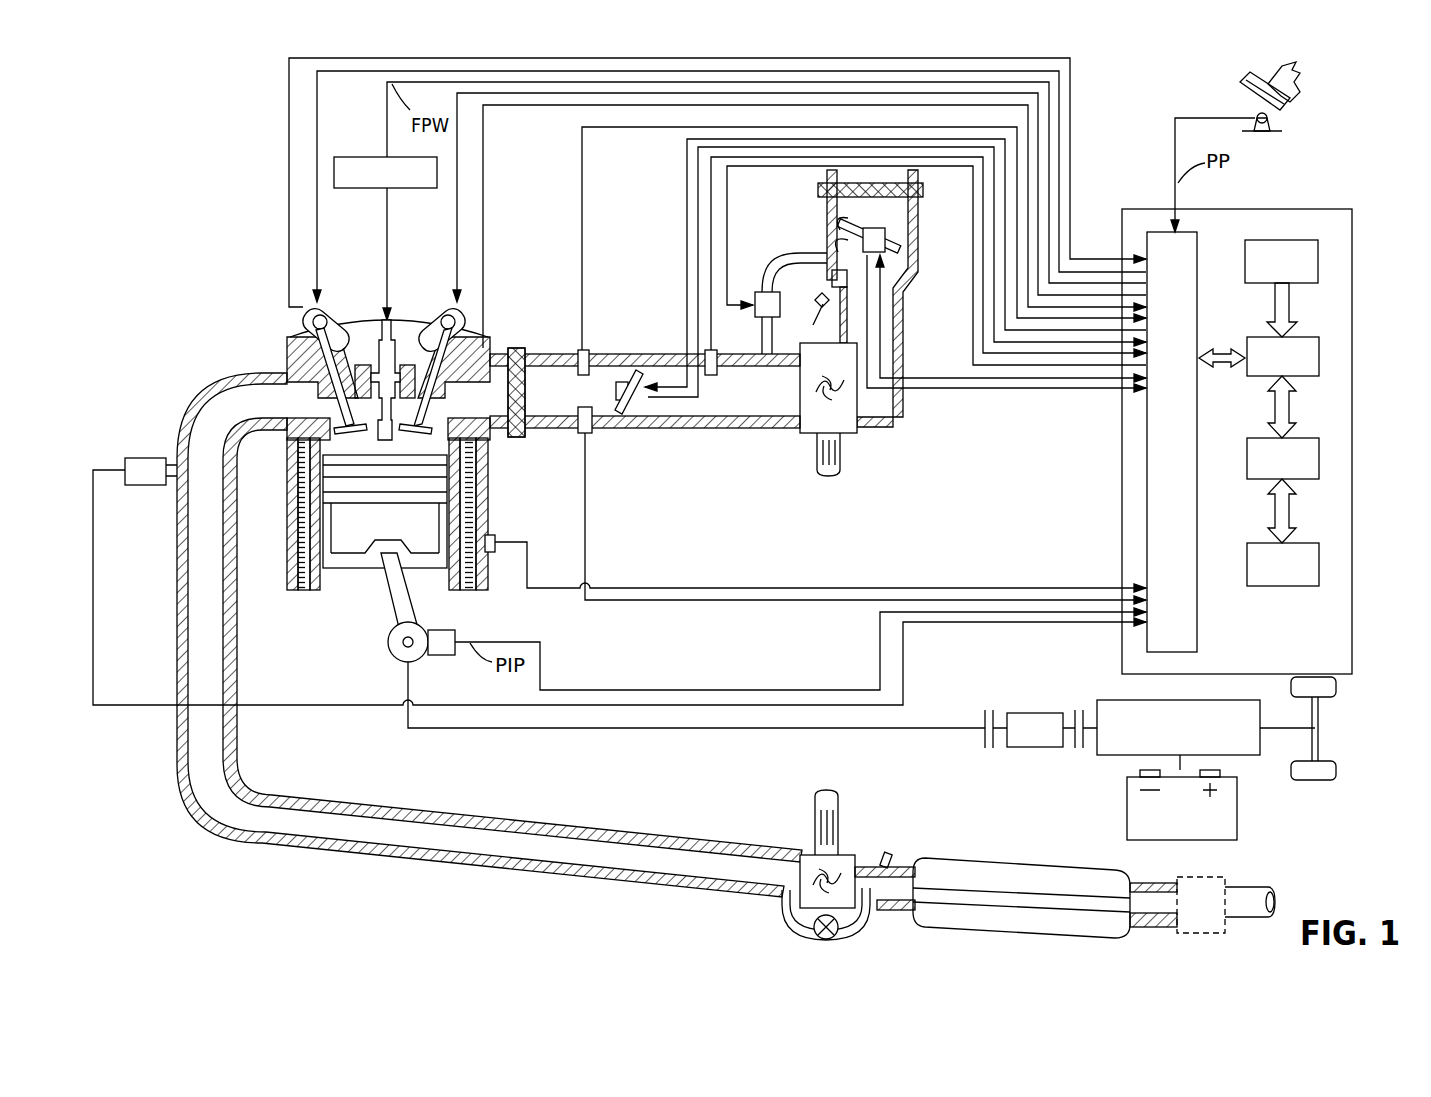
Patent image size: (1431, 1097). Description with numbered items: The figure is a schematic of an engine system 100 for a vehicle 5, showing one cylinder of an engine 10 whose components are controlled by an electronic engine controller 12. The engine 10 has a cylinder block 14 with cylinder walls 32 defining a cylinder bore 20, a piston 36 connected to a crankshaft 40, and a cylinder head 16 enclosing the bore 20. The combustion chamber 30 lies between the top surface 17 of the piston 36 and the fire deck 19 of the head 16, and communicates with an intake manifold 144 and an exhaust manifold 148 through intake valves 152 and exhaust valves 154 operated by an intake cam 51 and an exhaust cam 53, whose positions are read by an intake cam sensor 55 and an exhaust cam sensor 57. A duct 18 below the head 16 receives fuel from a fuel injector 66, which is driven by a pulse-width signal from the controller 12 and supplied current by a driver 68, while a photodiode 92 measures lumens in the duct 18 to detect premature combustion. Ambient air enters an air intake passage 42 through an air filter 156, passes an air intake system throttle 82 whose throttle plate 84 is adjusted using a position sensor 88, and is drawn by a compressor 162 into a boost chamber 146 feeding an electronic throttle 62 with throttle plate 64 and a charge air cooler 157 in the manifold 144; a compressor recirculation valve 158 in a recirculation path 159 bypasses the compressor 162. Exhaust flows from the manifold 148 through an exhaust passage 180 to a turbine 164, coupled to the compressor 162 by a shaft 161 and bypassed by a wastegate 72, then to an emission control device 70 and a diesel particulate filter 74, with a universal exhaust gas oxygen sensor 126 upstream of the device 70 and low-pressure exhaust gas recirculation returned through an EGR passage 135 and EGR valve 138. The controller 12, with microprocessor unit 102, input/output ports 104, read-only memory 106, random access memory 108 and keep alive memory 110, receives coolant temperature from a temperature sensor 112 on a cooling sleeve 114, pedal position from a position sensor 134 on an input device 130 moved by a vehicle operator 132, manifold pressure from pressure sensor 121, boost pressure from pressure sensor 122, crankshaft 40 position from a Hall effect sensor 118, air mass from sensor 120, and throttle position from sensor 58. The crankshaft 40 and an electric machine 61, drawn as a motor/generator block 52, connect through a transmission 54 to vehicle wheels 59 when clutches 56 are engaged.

The vehicle 5 is at (1183, 771).
The engine 10 is at (210, 262).
The electronic engine controller 12 is at (1276, 425).
The cylinder block 14 is at (275, 490).
The cylinder head 16 is at (502, 338).
The top surface of piston 17 is at (290, 572).
The duct 18 is at (415, 380).
The fire deck 19 is at (480, 345).
The cylinder bore 20 is at (273, 612).
The combustion chamber 30 is at (300, 535).
The cylinder walls 32 is at (332, 587).
The piston 36 is at (372, 560).
The crankshaft 40 is at (393, 660).
The air intake passage 42 is at (895, 298).
The intake cam 51 is at (448, 310).
The motor/generator 52 is at (1040, 747).
The exhaust cam 53 is at (325, 310).
The transmission 54 is at (1245, 755).
The intake cam sensor 55 is at (465, 335).
The clutches 56 is at (985, 715).
The exhaust cam sensor 57 is at (300, 322).
The throttle position sensor 58 is at (648, 400).
The vehicle wheels 59 is at (1320, 781).
The electric machine 61 is at (1180, 841).
The electronic throttle 62 is at (624, 370).
The throttle plate 64 is at (650, 375).
The fuel injector 66 is at (392, 330).
The driver 68 is at (380, 156).
The emission control device 70 is at (915, 935).
The wastegate 72 is at (812, 932).
The diesel particulate filter 74 is at (1202, 905).
The air intake system throttle 82 is at (843, 232).
The throttle plate 84 is at (850, 225).
The position sensor 88 is at (828, 238).
The photodiode 92 is at (358, 380).
The engine system 100 is at (135, 110).
The microprocessor unit 102 is at (1320, 350).
The input/output ports 104 is at (1200, 238).
The read-only memory 106 is at (1320, 258).
The random access memory 108 is at (1320, 452).
The keep alive memory 110 is at (1320, 558).
The temperature sensor 112 is at (495, 532).
The cooling sleeve 114 is at (485, 590).
The Hall effect sensor 118 is at (448, 656).
The air mass sensor 120 is at (592, 433).
The pressure sensor 121 is at (586, 348).
The pressure sensor 122 is at (717, 350).
The UEGO sensor 126 is at (125, 460).
The input device 130 is at (1246, 100).
The vehicle operator 132 is at (1298, 80).
The position sensor 134 is at (1270, 118).
The EGR passage 135 is at (884, 860).
The EGR valve 138 is at (832, 277).
The intake manifold 144 is at (543, 404).
The intake boost chamber 146 is at (708, 404).
The exhaust manifold 148 is at (240, 414).
The intake valves 152 is at (440, 418).
The exhaust valves 154 is at (290, 356).
The air filter 156 is at (923, 190).
The charge air cooler 157 is at (525, 420).
The compressor recirculation valve 158 is at (757, 290).
The compressor recirculation path 159 is at (778, 345).
The shaft 161 is at (840, 458).
The compressor 162 is at (857, 433).
The turbine 164 is at (805, 855).
The exhaust passage 180 is at (430, 885).